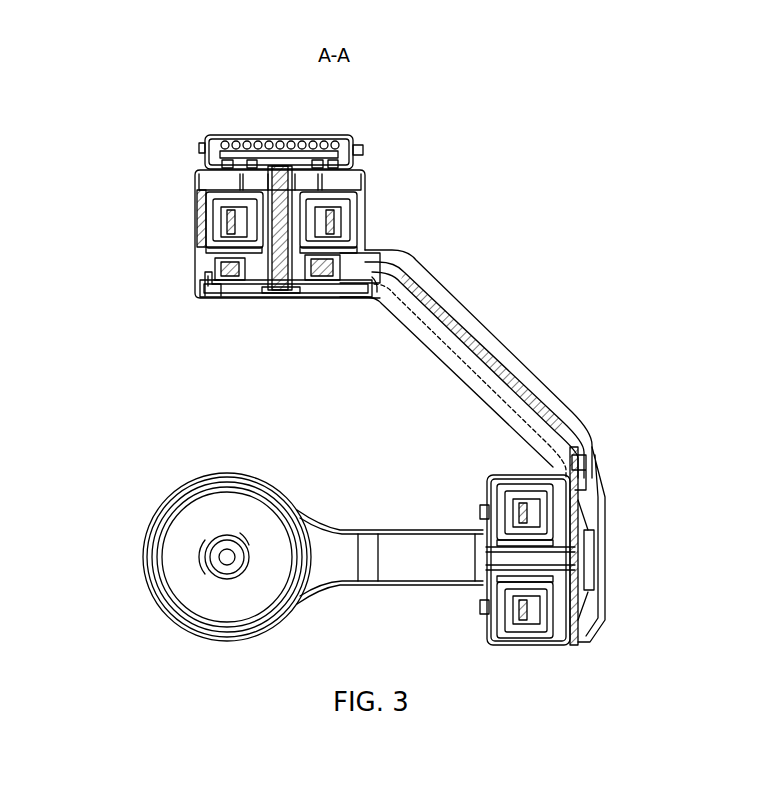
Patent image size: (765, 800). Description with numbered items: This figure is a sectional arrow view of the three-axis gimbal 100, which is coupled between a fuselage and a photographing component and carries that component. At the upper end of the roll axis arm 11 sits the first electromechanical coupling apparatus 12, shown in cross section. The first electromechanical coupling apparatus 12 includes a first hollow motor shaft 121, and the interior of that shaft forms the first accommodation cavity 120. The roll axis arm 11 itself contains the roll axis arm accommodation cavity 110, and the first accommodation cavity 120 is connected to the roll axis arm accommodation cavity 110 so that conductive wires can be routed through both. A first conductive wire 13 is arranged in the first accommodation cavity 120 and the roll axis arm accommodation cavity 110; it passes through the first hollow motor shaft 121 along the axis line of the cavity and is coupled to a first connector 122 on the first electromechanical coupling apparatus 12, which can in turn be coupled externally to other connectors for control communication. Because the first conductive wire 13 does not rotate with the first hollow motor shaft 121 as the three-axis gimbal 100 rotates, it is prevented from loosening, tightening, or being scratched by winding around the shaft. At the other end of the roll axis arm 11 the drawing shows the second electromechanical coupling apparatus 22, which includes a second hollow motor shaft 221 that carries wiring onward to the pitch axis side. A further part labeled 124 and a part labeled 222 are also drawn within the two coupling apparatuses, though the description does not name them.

The three-axis gimbal 100 is at (74, 33).
The first electromechanical coupling apparatus 12 is at (354, 179).
The first connector 122 is at (210, 135).
The first hollow motor shaft 121 is at (238, 183).
The bottom bracket 124 is at (200, 294).
The first accommodation cavity 120 is at (268, 300).
The roll axis arm 11 is at (452, 303).
The first conductive wire 13 is at (450, 338).
The roll axis arm accommodation cavity 110 is at (440, 336).
The second electromechanical coupling apparatus 22 is at (607, 557).
The upper stator 222 is at (583, 518).
The second hollow motor shaft 221 is at (576, 606).